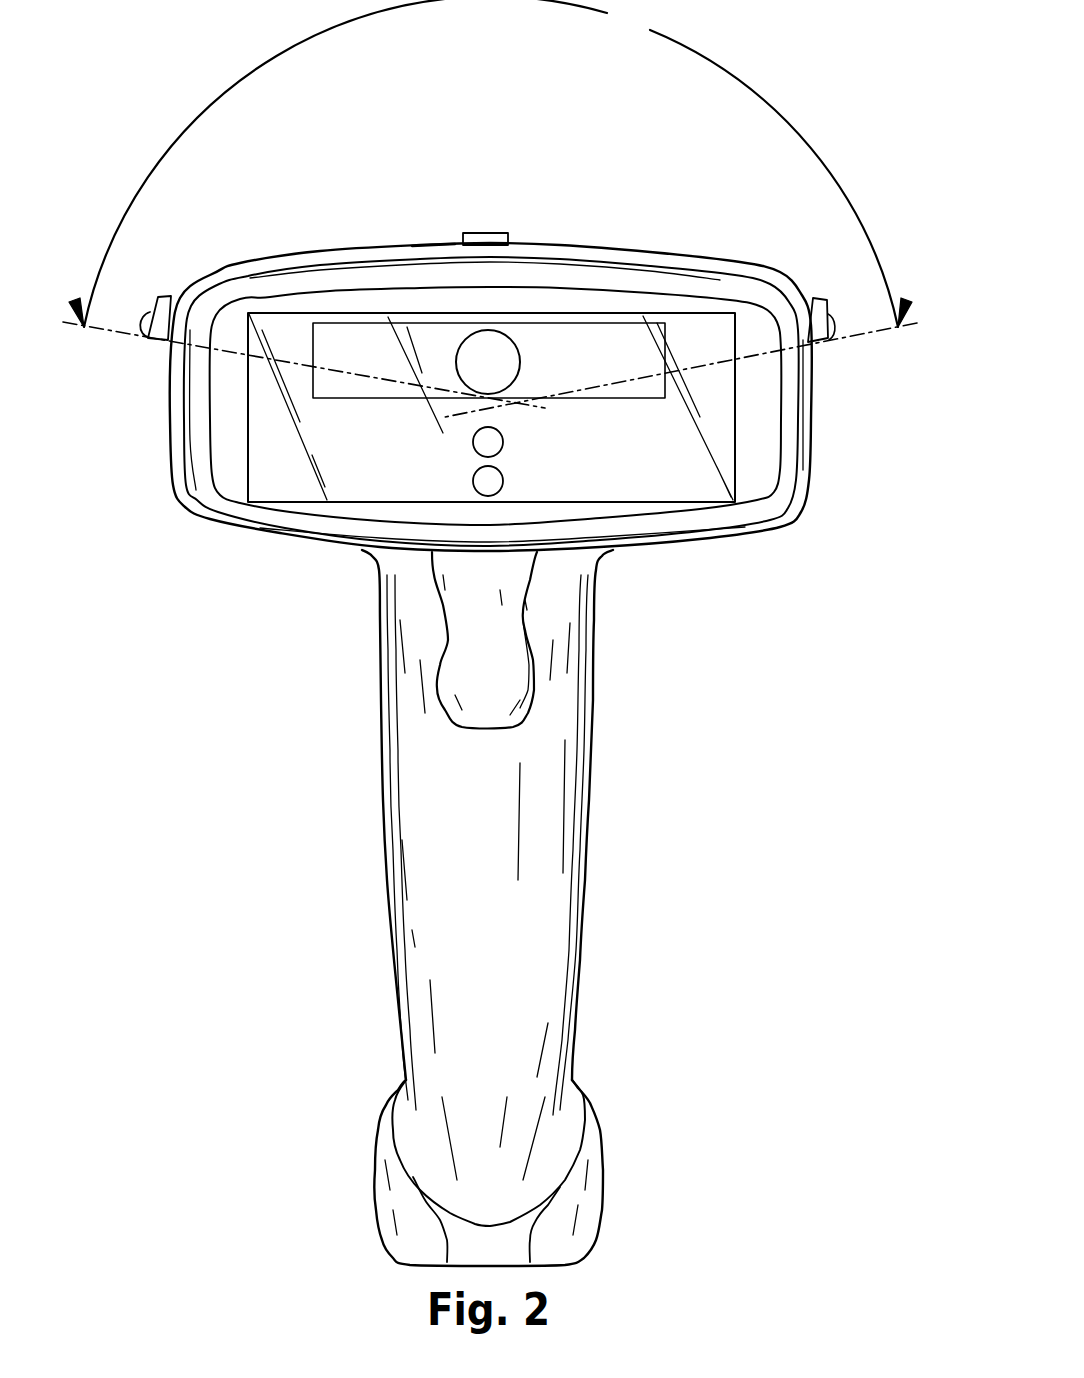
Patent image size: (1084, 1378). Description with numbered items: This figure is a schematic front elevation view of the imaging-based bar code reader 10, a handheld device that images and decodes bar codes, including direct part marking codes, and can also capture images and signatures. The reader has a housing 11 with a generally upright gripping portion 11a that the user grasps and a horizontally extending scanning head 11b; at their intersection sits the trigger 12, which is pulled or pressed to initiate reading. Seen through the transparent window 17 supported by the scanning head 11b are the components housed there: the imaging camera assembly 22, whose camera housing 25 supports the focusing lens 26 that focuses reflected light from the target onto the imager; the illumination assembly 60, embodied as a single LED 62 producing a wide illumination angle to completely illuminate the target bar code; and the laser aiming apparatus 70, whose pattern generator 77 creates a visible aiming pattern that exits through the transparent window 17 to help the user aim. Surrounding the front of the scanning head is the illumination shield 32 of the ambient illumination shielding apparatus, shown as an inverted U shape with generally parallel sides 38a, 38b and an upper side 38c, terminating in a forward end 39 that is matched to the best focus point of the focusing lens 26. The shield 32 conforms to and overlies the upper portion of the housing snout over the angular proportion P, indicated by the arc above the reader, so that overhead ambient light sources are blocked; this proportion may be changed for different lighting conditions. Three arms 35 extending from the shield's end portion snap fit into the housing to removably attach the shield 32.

The angular proportion P is at (490, 208).
The imaging-based bar code reader 10 is at (728, 153).
The housing 11 is at (366, 717).
The gripping portion 11a is at (584, 955).
The scanning head 11b is at (701, 537).
The trigger 12 is at (480, 665).
The transparent window 17 is at (347, 450).
The imaging camera assembly 22 is at (630, 322).
The camera housing 25 is at (410, 325).
The focusing lens 26 is at (487, 360).
The illumination shield 32 is at (593, 246).
The arms 35 is at (485, 233).
The side of shield 38a is at (176, 292).
The side of shield 38b is at (812, 300).
The upper side of shield 38c is at (433, 244).
The forward end of shield 39 is at (288, 283).
The illumination assembly 60 is at (492, 505).
The LED 62 is at (468, 448).
The aiming apparatus 70 is at (477, 463).
The pattern generator 77 is at (503, 443).